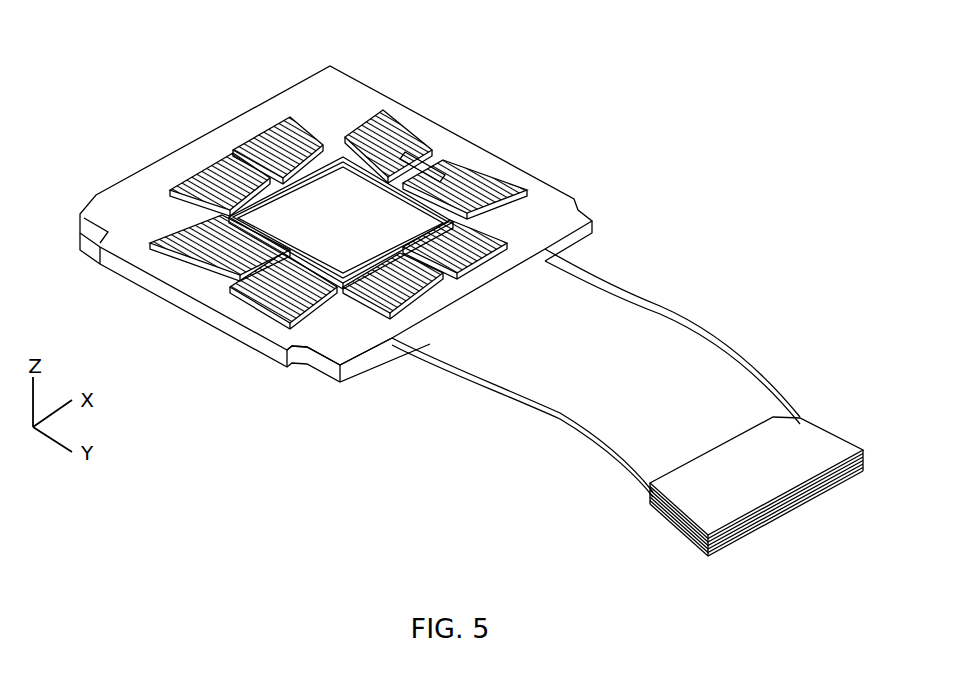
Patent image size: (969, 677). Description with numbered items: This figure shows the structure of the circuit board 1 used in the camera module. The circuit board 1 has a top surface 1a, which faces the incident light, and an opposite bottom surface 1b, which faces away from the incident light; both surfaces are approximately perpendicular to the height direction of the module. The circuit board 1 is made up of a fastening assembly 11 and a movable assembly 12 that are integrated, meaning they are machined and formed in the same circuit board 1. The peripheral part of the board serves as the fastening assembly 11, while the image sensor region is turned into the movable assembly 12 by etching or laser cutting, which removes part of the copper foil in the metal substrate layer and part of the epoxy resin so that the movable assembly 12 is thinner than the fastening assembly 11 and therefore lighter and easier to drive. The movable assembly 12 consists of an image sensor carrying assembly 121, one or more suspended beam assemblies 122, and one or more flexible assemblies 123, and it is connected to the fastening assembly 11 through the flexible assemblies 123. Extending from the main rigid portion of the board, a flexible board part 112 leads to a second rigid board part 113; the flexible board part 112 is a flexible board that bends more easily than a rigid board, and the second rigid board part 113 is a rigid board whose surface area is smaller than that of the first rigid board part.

The circuit board 1 is at (71, 27).
The fastening assembly 11 is at (133, 207).
The top surface 1a is at (360, 333).
The bottom surface 1b is at (322, 370).
The flexible board part 112 is at (628, 332).
The second rigid board part 113 is at (795, 441).
The movable assembly 12 is at (570, 110).
The image sensor carrying assembly 121 is at (435, 205).
The suspended beam assembly 122 is at (427, 167).
The flexible assembly 123 is at (387, 147).